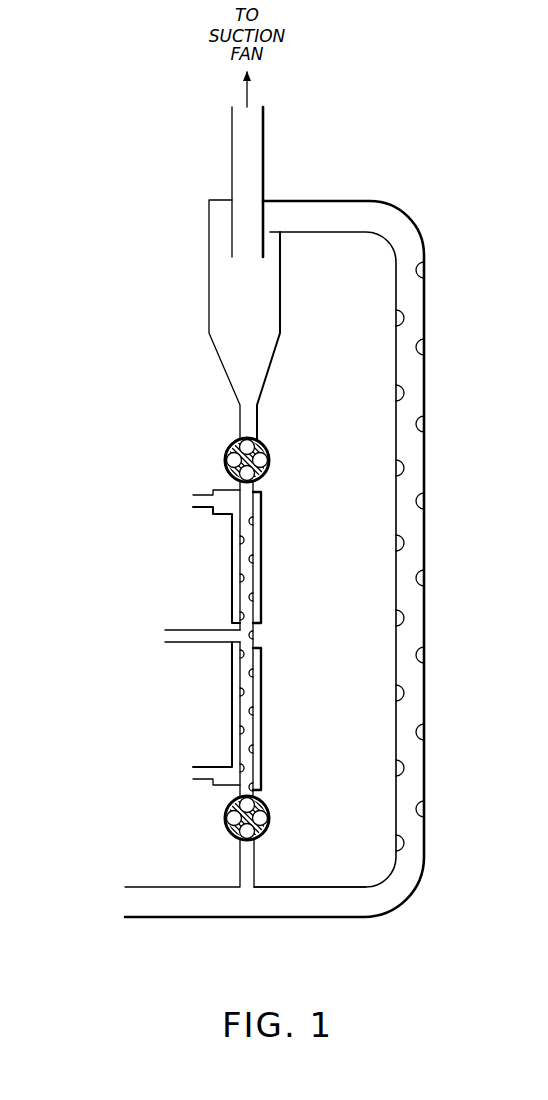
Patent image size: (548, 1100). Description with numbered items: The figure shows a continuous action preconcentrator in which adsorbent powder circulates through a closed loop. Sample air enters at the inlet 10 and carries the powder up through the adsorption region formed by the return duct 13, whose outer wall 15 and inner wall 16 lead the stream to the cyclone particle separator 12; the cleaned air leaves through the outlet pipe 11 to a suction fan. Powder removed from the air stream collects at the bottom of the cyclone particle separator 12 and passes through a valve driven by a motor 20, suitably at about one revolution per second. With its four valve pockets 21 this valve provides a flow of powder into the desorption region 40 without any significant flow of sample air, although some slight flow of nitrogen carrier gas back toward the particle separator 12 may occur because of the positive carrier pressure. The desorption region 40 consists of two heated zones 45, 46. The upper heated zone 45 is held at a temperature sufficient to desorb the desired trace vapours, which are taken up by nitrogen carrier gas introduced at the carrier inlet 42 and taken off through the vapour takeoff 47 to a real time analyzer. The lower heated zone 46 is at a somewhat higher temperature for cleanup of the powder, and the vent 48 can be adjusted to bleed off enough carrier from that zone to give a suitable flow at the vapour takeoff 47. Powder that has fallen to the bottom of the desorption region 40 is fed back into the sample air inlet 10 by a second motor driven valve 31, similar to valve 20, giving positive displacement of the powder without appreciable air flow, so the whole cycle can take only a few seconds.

The inlet 10 is at (122, 900).
The outlet pipe to suction fan 11 is at (265, 148).
The cyclone particle separator 12 is at (209, 292).
The return duct 13 is at (304, 559).
The outer duct wall 15 is at (418, 734).
The inner duct wall 16 is at (329, 559).
The motor driven valve 20 is at (236, 447).
The valve pockets 21 is at (257, 438).
The motor driven valve 31 is at (270, 820).
The desorption region 40 is at (203, 639).
The carrier inlet 42 is at (162, 636).
The heated zone 45 is at (232, 558).
The heated zone 46 is at (232, 708).
The vapour takeoff 47 is at (192, 503).
The vent 48 is at (192, 775).